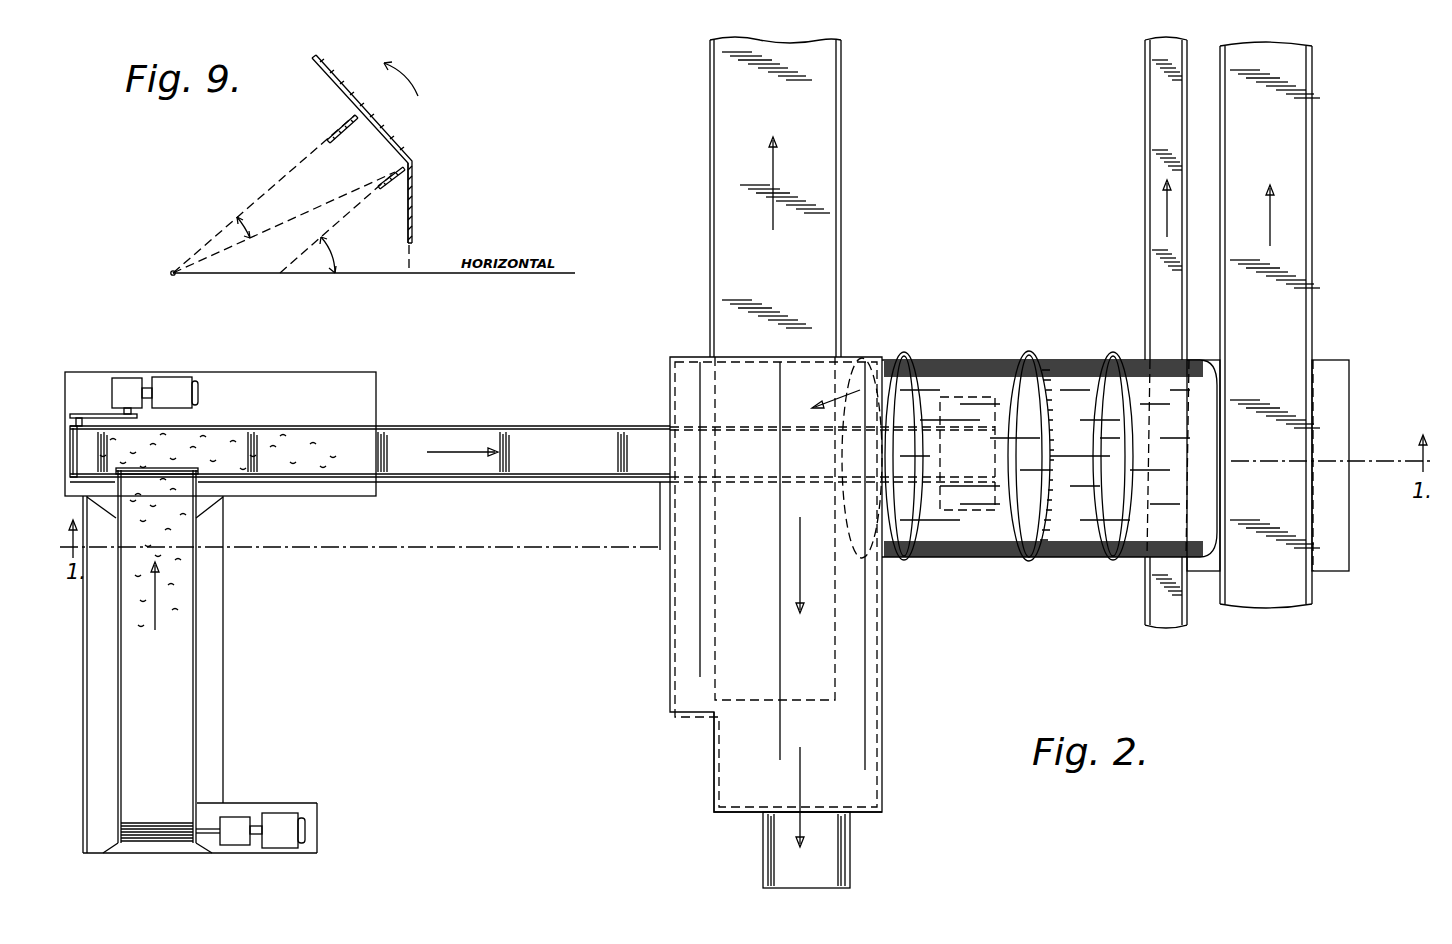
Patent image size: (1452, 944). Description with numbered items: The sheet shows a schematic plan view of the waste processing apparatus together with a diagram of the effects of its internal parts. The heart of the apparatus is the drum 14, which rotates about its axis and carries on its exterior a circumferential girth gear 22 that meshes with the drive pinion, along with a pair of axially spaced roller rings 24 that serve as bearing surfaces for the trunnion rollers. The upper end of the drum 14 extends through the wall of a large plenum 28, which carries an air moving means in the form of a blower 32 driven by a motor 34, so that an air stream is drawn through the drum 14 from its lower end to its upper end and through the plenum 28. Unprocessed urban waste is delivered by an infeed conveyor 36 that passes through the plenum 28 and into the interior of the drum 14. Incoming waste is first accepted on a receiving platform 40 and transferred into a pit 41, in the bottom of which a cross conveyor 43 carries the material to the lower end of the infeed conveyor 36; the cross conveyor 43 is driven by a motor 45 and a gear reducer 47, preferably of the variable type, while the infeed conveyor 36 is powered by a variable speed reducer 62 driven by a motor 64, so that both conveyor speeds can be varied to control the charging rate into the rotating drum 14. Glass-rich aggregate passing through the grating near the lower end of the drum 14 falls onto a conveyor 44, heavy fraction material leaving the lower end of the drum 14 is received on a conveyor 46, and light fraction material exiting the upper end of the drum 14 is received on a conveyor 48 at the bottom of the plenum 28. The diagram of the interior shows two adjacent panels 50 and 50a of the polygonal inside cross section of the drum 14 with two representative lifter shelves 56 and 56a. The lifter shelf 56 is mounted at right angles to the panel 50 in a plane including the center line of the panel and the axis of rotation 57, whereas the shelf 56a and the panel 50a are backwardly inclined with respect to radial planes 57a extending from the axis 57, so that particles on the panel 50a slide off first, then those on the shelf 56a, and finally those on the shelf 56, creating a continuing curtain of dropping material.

In FIG. 2, the drum 14 is at (970, 558).
In FIG. 2, the girth gear 22 is at (1023, 355).
In FIG. 2, the roller rings 24 is at (902, 350).
In FIG. 2, the plenum 28 is at (669, 585).
In FIG. 2, the blower 32 is at (713, 767).
In FIG. 2, the motor 34 is at (763, 870).
In FIG. 2, the infeed conveyor 36 is at (490, 437).
In FIG. 2, the receiving platform 40 is at (70, 686).
In FIG. 2, the pit 41 is at (118, 783).
In FIG. 2, the cross conveyor 43 is at (186, 607).
In FIG. 2, the conveyor 44 is at (1158, 162).
In FIG. 2, the motor 45 is at (288, 820).
In FIG. 2, the conveyor 46 is at (1295, 155).
In FIG. 2, the gear reducer 47 is at (236, 822).
In FIG. 2, the conveyor 48 is at (822, 143).
In FIG. 9, the panel 50 is at (380, 131).
In FIG. 9, the panel 50a is at (412, 219).
In FIG. 9, the lifter shelf 56 is at (355, 119).
In FIG. 9, the lifter shelf 56a is at (392, 180).
In FIG. 9, the axis of rotation 57 is at (170, 272).
In FIG. 9, the radial planes 57a is at (342, 198).
In FIG. 2, the variable speed reducer 62 is at (128, 382).
In FIG. 2, the motor 64 is at (183, 382).